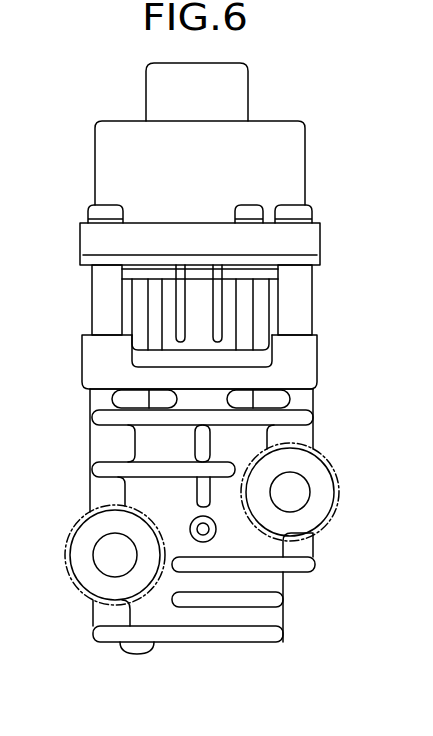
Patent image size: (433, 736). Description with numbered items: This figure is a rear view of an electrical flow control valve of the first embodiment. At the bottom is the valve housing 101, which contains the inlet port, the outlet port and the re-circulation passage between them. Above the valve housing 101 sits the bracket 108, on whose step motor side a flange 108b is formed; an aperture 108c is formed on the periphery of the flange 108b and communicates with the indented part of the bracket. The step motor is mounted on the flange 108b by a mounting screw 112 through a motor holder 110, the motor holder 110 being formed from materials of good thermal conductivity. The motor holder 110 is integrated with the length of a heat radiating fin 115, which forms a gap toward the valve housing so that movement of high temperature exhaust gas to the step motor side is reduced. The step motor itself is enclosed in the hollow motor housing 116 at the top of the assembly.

The hollow motor housing 116 is at (293, 143).
The mounting screw 112 is at (305, 207).
The motor holder 110 is at (313, 257).
The heat radiating fin 115 is at (222, 313).
The flange 108b is at (310, 342).
The bracket 108 is at (310, 368).
The aperture 108c is at (290, 398).
The valve housing 101 is at (302, 547).